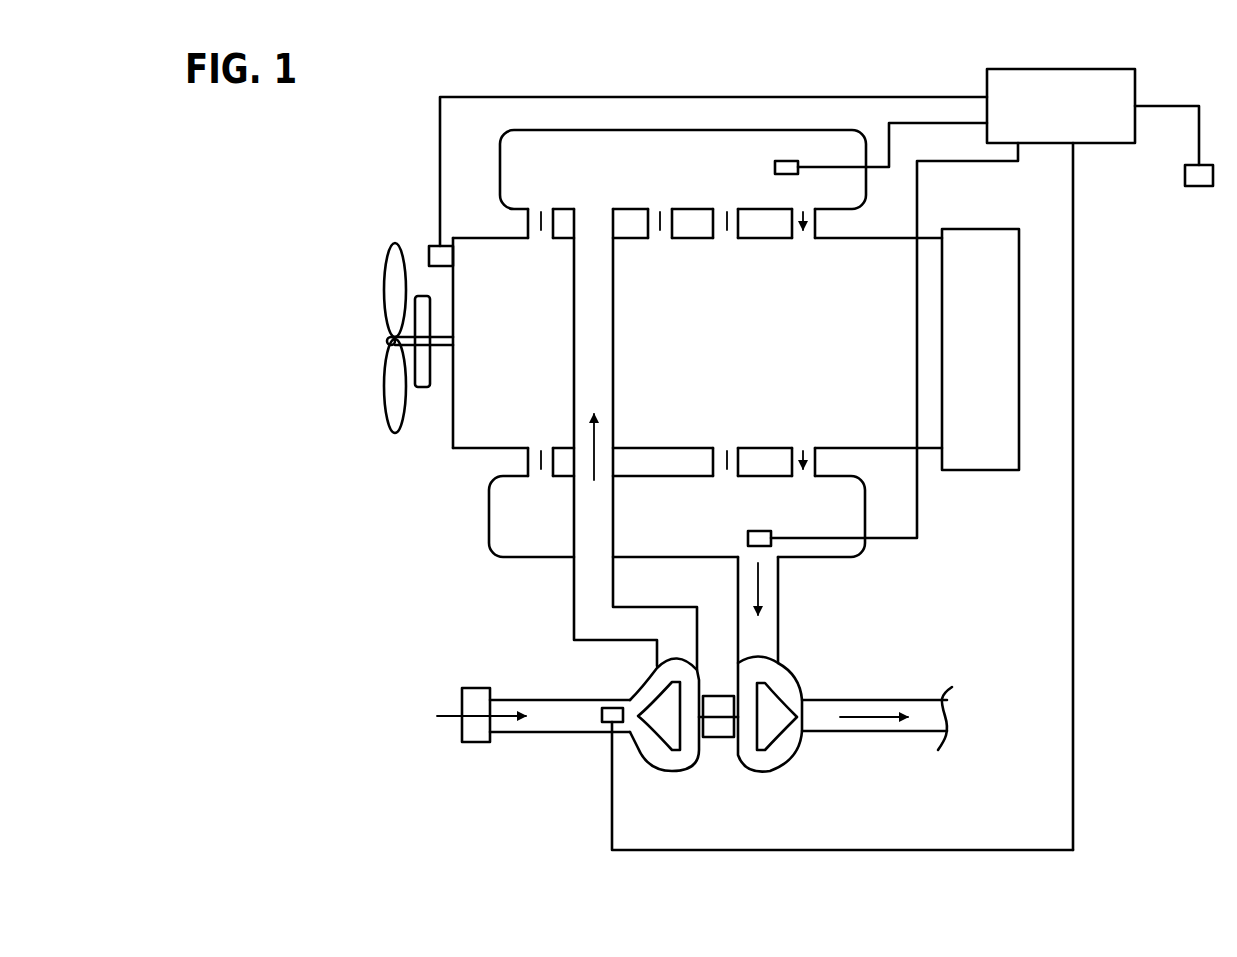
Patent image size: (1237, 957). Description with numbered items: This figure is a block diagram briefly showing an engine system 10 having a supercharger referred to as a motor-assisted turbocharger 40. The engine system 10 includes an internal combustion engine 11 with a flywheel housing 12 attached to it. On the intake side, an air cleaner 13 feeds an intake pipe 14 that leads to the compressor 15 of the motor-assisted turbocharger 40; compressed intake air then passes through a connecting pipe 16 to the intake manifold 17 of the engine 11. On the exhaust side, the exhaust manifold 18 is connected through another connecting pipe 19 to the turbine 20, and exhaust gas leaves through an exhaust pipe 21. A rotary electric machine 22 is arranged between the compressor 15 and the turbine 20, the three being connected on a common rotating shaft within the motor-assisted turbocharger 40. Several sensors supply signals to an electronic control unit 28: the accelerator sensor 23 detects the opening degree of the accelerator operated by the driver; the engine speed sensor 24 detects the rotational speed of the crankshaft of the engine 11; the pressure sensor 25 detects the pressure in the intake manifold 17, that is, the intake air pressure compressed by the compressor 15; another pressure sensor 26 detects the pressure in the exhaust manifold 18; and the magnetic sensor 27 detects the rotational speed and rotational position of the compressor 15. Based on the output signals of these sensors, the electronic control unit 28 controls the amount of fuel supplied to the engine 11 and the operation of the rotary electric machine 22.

The engine system 10 is at (822, 84).
The internal combustion engine 11 is at (452, 432).
The flywheel housing 12 is at (988, 470).
The air cleaner 13 is at (474, 742).
The intake pipe 14 is at (536, 732).
The compressor 15 is at (677, 762).
The connecting pipe 16 is at (584, 610).
The intake manifold 17 is at (500, 168).
The exhaust manifold 18 is at (489, 525).
The connecting pipe 19 is at (772, 595).
The turbine 20 is at (766, 760).
The exhaust pipe 21 is at (882, 731).
The rotary electric machine 22 is at (719, 737).
The accelerator sensor 23 is at (1199, 186).
The engine speed sensor 24 is at (436, 246).
The pressure sensor 25 is at (775, 167).
The pressure sensor 26 is at (748, 538).
The magnetic sensor 27 is at (606, 722).
The electronic control unit 28 is at (1107, 143).
The motor-assisted turbocharger 40 is at (728, 803).